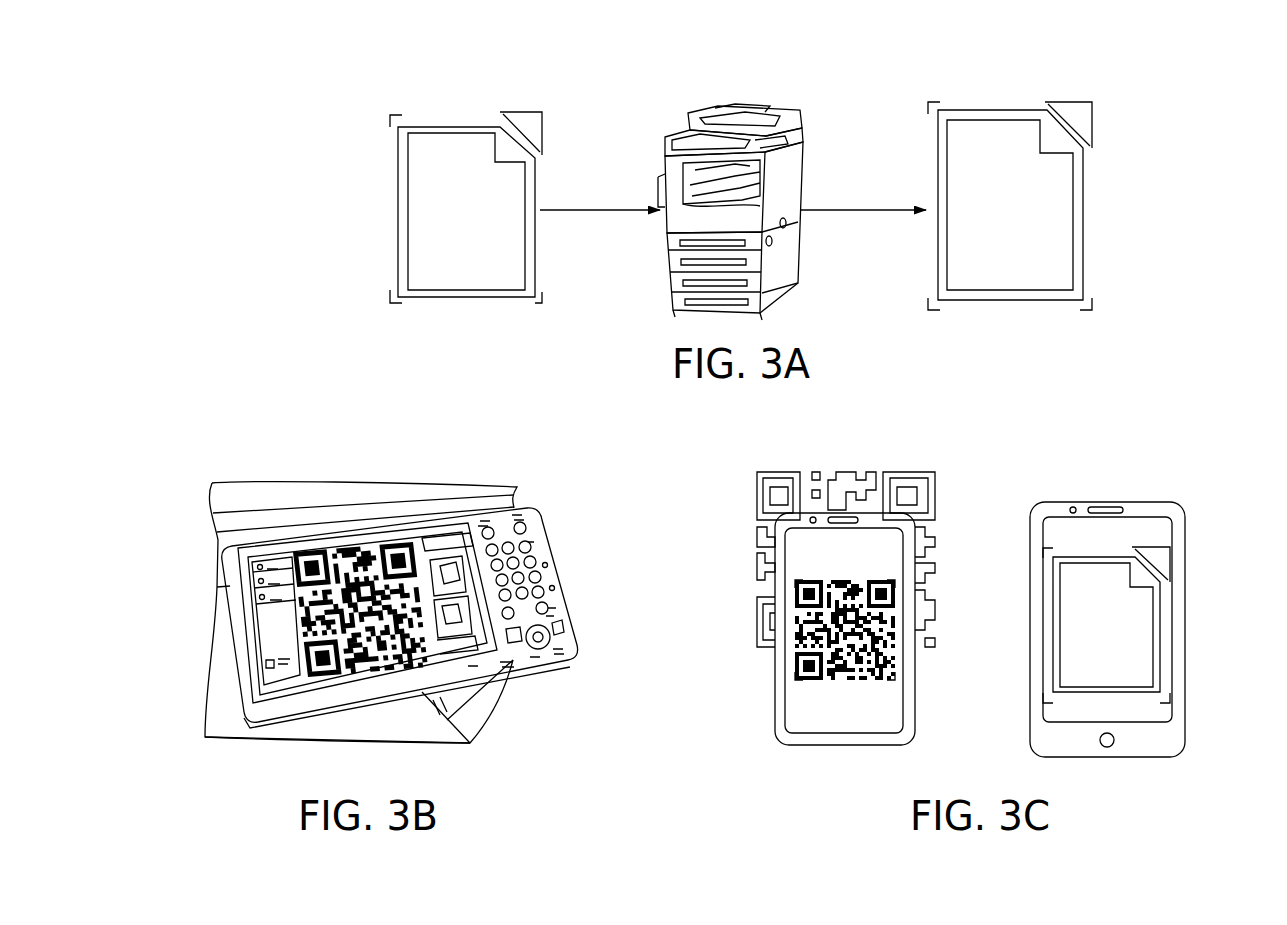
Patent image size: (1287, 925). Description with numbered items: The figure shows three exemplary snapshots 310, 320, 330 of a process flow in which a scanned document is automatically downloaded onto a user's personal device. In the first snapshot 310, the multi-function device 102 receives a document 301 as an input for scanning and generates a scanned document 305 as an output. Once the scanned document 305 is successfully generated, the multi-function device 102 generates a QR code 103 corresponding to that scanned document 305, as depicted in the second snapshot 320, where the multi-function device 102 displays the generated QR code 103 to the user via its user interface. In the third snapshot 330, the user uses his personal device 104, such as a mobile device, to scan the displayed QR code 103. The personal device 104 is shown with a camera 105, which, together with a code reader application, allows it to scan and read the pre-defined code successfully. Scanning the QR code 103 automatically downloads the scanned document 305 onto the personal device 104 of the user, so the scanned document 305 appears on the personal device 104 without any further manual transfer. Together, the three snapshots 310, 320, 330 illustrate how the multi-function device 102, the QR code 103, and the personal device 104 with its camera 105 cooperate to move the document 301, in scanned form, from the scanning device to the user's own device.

In FIG. 3A, the snapshot 310 is at (345, 96).
In FIG. 3A, the document 301 is at (460, 108).
In FIG. 3A, the multi-function device 102 is at (738, 110).
In FIG. 3B, the multi-function device 102 is at (447, 502).
In FIG. 3A, the scanned document 305 is at (985, 98).
In FIG. 3C, the scanned document 305 is at (1172, 665).
In FIG. 3B, the snapshot 320 is at (255, 430).
In FIG. 3B, the QR code 103 is at (375, 550).
In FIG. 3C, the QR code 103 is at (887, 663).
In FIG. 3C, the snapshot 330 is at (1055, 445).
In FIG. 3C, the personal device 104 is at (915, 712).
In FIG. 3C, the camera 105 is at (812, 515).